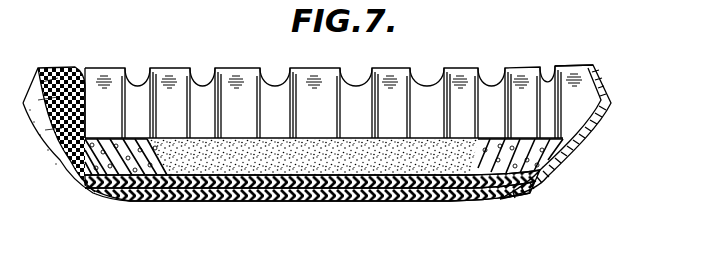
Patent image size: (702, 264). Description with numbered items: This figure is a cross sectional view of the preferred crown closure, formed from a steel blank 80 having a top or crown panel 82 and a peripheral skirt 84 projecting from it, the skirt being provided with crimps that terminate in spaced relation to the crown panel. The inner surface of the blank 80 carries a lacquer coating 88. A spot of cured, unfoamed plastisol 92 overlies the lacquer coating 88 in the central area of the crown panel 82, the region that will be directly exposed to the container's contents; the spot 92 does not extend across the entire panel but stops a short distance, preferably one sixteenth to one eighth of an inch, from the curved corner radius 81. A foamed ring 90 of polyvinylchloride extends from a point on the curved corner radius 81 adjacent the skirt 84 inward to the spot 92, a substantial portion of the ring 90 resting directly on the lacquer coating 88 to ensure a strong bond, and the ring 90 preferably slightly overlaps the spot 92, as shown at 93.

The steel blank 80 is at (225, 198).
The curved corner radius 81 is at (87, 186).
The crown panel 82 is at (284, 202).
The peripheral skirt 84 is at (545, 130).
The lacquer coating 88 is at (437, 185).
The foamed ring 90 is at (533, 165).
The spot of unfoamed plastisol 92 is at (357, 175).
The overlap 93 is at (135, 172).